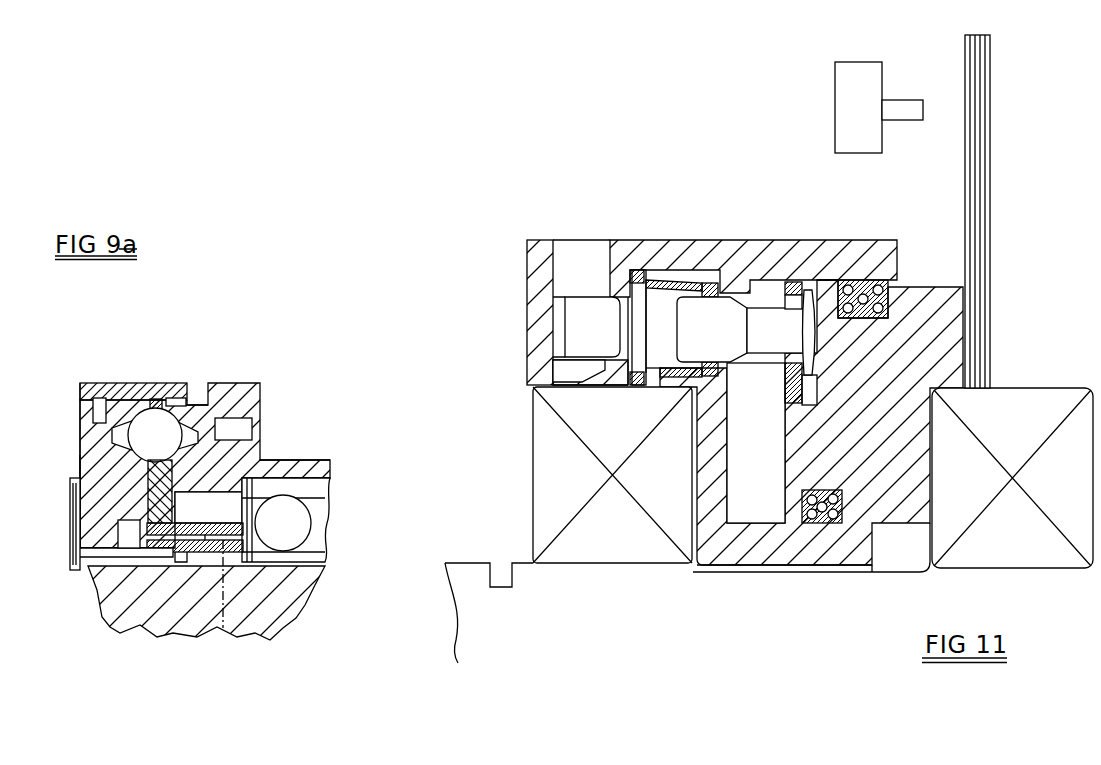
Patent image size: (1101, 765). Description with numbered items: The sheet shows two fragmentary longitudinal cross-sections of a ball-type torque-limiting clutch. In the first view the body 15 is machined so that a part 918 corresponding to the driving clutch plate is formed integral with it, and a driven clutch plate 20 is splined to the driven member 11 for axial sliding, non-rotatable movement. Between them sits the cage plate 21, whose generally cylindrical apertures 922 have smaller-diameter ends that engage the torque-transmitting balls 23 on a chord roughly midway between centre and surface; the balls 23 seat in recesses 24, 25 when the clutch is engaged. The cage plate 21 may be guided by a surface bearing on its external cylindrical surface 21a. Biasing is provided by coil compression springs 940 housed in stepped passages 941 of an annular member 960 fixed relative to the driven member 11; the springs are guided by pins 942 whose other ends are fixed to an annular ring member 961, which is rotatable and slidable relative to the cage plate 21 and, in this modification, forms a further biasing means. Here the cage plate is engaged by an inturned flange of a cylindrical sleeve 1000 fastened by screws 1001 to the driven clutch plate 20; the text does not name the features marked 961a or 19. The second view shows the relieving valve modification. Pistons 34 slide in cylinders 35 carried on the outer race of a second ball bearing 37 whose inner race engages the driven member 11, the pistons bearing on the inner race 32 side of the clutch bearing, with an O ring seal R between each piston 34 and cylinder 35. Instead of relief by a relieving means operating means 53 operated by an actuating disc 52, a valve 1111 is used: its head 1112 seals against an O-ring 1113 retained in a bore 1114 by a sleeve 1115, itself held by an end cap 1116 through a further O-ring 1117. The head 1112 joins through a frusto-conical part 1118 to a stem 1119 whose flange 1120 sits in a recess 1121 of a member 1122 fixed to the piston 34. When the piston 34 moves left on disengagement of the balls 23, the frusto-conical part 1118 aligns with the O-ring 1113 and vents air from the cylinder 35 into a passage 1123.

In FIG. 9A, the body 15 is at (237, 383).
In FIG. 9A, the cylindrical sleeve 1000 is at (140, 385).
In FIG. 9A, the screws 1001 is at (102, 392).
In FIG. 9A, the cage plate 21 is at (160, 398).
In FIG. 9A, the external cylindrical surface 21a is at (160, 398).
In FIG. 9A, the recess 25 is at (145, 420).
In FIG. 9A, the balls 23 is at (155, 435).
In FIG. 9A, the driven clutch plate 20 is at (82, 410).
In FIG. 9A, the recess 24 is at (85, 468).
In FIG. 9A, the plunger rod 961a is at (133, 528).
In FIG. 9A, the driving clutch plate part 918 is at (222, 490).
In FIG. 9A, the stepped passages 941 is at (270, 468).
In FIG. 9A, the bearing 19 is at (297, 553).
In FIG. 9A, the pins 942 is at (168, 553).
In FIG. 9A, the annular ring member 961 is at (150, 556).
In FIG. 9A, the apertures 922 is at (76, 548).
In FIG. 9A, the annular member 960 is at (250, 625).
In FIG. 9A, the coil compression springs 940 is at (237, 601).
In FIG. 11, the end cap 1116 is at (538, 250).
In FIG. 11, the passage 1123 is at (627, 305).
In FIG. 11, the piston 34 is at (934, 286).
In FIG. 11, the cylinder 35 is at (733, 548).
In FIG. 11, the member 1122 is at (807, 407).
In FIG. 11, the O-ring 1113 is at (717, 295).
In FIG. 11, the further O-ring 1117 is at (641, 378).
In FIG. 11, the bore 1114 is at (663, 377).
In FIG. 11, the sleeve 1115 is at (697, 378).
In FIG. 11, the valve head 1112 is at (715, 340).
In FIG. 11, the valve 1111 is at (747, 286).
In FIG. 11, the frusto-conical part 1118 is at (772, 322).
In FIG. 11, the stem 1119 is at (785, 282).
In FIG. 11, the flange 1120 is at (812, 342).
In FIG. 11, the recess 1121 is at (819, 372).
In FIG. 11, the O ring seal R is at (868, 298).
In FIG. 11, the second ball bearing 37 is at (488, 425).
In FIG. 11, the driven member 11 is at (468, 632).
In FIG. 11, the inner race 32 is at (1037, 543).
In FIG. 11, the actuating disc 52 is at (982, 172).
In FIG. 11, the relieving means operating means 53 is at (869, 74).